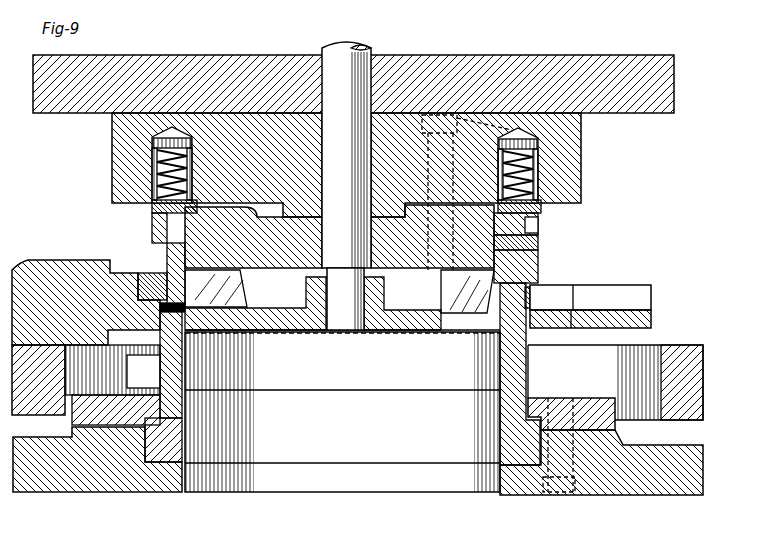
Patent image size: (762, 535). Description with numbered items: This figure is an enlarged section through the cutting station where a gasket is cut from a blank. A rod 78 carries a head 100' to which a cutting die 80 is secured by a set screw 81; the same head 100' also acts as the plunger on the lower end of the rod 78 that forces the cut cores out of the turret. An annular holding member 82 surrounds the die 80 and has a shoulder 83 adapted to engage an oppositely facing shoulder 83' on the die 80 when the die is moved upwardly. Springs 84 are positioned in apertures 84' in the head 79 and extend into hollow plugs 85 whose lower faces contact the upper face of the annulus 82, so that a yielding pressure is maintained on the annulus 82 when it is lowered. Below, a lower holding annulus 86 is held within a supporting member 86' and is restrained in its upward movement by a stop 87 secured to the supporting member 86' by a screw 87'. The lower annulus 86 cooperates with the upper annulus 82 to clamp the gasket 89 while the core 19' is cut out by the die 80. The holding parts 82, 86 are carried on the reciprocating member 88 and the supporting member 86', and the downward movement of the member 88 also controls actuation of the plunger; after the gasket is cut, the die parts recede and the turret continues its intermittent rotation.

The member 88 is at (207, 65).
The rod 78 is at (354, 68).
The head 79 is at (581, 162).
The set screw 81 is at (555, 123).
The springs 84 is at (340, 166).
The apertures 84' is at (343, 165).
The hollow plugs 85 is at (152, 212).
The annular holding member 82 is at (165, 250).
The shoulder 83 is at (538, 226).
The shoulder 83' is at (541, 243).
The cutting die 80 is at (360, 258).
The head 100' is at (259, 315).
The core 19' is at (342, 315).
The lower holding annulus 86 is at (601, 374).
The gasket 89 is at (533, 308).
The stop 87 is at (589, 419).
The screw 87' is at (573, 459).
The supporting member 86' is at (601, 475).